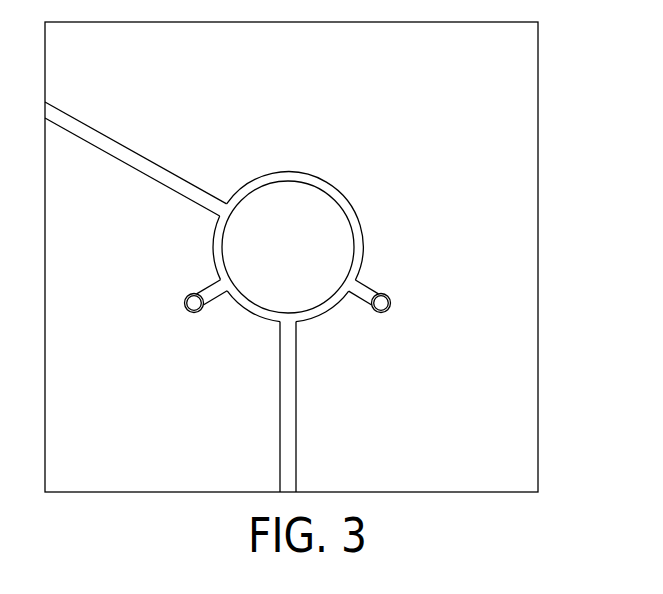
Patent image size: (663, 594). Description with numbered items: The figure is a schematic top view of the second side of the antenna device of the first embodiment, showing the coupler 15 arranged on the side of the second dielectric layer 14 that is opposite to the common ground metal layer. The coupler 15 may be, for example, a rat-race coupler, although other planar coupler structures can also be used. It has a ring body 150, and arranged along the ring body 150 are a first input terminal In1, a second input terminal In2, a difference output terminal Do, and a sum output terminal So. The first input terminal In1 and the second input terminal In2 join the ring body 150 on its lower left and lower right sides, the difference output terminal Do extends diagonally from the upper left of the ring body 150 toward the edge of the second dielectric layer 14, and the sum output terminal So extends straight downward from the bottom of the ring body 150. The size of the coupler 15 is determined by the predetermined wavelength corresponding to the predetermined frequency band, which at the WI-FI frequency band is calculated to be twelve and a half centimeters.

The second dielectric layer 14 is at (538, 109).
The coupler 15 is at (262, 296).
The ring body 150 is at (343, 212).
The difference output terminal Do is at (50, 114).
The sum output terminal So is at (288, 474).
The first input terminal In1 is at (381, 303).
The second input terminal In2 is at (194, 303).